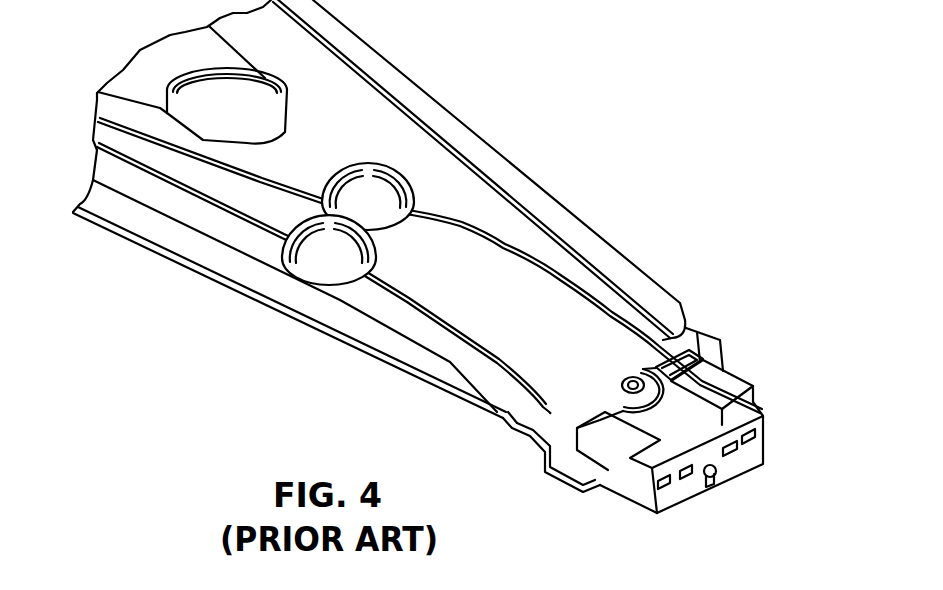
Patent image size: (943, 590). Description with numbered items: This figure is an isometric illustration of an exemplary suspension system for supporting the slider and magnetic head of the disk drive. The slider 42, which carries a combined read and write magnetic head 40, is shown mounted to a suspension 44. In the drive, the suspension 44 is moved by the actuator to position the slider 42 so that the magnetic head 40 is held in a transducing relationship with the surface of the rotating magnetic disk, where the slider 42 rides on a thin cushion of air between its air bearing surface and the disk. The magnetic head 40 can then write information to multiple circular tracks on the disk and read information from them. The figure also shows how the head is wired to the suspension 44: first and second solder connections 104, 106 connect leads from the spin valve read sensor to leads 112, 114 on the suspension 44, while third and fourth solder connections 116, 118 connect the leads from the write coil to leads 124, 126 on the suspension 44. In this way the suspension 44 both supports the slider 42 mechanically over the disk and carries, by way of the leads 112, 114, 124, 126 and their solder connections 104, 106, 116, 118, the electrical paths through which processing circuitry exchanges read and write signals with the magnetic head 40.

The magnetic head 40 is at (720, 490).
The slider 42 is at (592, 498).
The suspension 44 is at (525, 173).
The first solder connection 104 is at (655, 500).
The second solder connection 106 is at (750, 432).
The lead 112 is at (412, 306).
The lead 114 is at (583, 293).
The third solder connection 116 is at (685, 487).
The fourth solder connection 118 is at (733, 447).
The lead 124 is at (428, 308).
The lead 126 is at (503, 254).